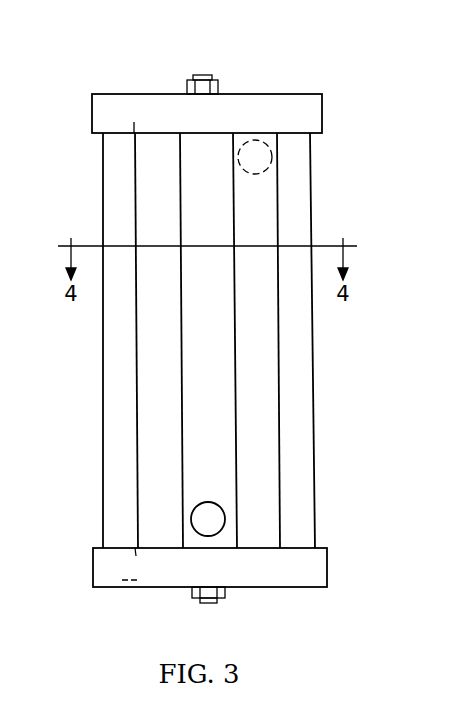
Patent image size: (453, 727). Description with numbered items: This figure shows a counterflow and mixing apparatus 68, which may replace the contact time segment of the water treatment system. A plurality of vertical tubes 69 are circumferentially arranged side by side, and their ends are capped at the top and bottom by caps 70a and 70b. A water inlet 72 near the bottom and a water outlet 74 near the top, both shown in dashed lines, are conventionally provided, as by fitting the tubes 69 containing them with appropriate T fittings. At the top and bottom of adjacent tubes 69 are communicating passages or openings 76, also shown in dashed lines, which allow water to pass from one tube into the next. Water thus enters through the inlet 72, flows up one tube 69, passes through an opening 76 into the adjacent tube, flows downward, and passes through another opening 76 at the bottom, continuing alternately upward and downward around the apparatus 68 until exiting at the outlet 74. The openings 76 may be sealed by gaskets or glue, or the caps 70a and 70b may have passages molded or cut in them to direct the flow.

The counterflow and mixing apparatus 68 is at (220, 339).
The tubes 69 is at (103, 455).
The cap 70a is at (242, 93).
The cap 70b is at (282, 588).
The water inlet 72 is at (200, 535).
The water outlet 74 is at (272, 157).
The communicating passages or openings 76 is at (133, 103).